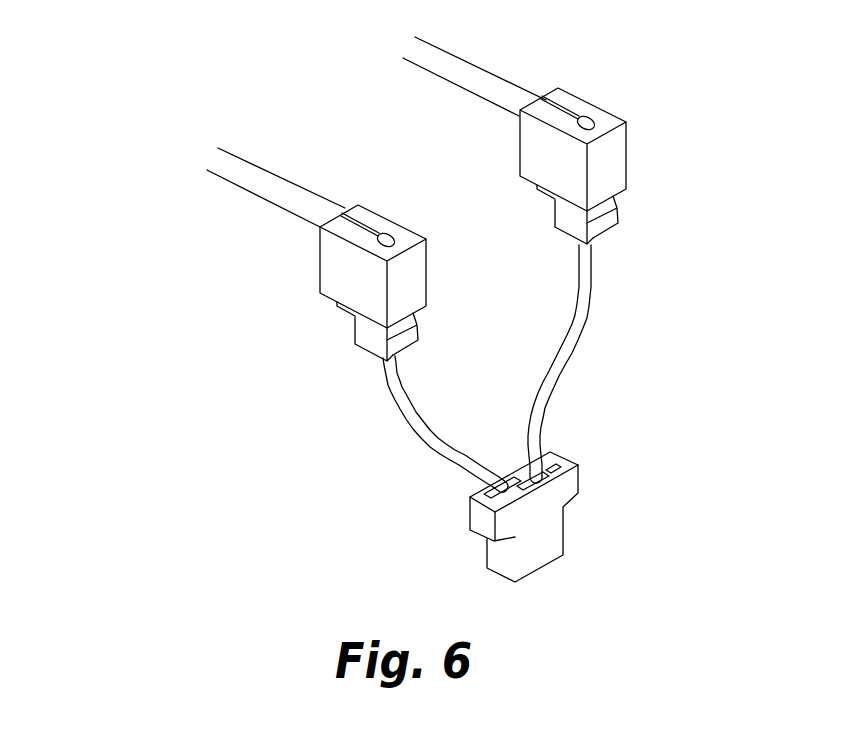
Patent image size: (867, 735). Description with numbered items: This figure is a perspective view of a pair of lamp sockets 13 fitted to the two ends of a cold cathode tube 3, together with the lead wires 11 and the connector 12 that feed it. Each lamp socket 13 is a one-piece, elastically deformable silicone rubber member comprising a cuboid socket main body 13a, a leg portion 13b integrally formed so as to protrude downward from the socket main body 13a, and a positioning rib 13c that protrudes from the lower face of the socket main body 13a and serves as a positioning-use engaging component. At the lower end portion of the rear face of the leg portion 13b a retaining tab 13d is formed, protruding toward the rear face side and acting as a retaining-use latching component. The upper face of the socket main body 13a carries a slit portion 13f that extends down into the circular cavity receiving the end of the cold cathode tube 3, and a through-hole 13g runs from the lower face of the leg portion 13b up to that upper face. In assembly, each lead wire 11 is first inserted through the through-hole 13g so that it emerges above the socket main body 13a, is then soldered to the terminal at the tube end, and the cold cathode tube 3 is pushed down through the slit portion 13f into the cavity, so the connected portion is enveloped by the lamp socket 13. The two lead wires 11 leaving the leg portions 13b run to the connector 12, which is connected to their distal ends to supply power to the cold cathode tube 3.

The cold cathode tube 3 is at (261, 168).
The lead wire 11 is at (583, 348).
The connector 12 is at (547, 538).
The lamp socket 13 is at (497, 211).
The socket main body 13a is at (618, 158).
The leg portion 13b is at (567, 218).
The positioning rib 13c is at (542, 200).
The retaining tab 13d is at (610, 228).
The slit portion 13f is at (557, 90).
The through-hole 13g is at (566, 132).